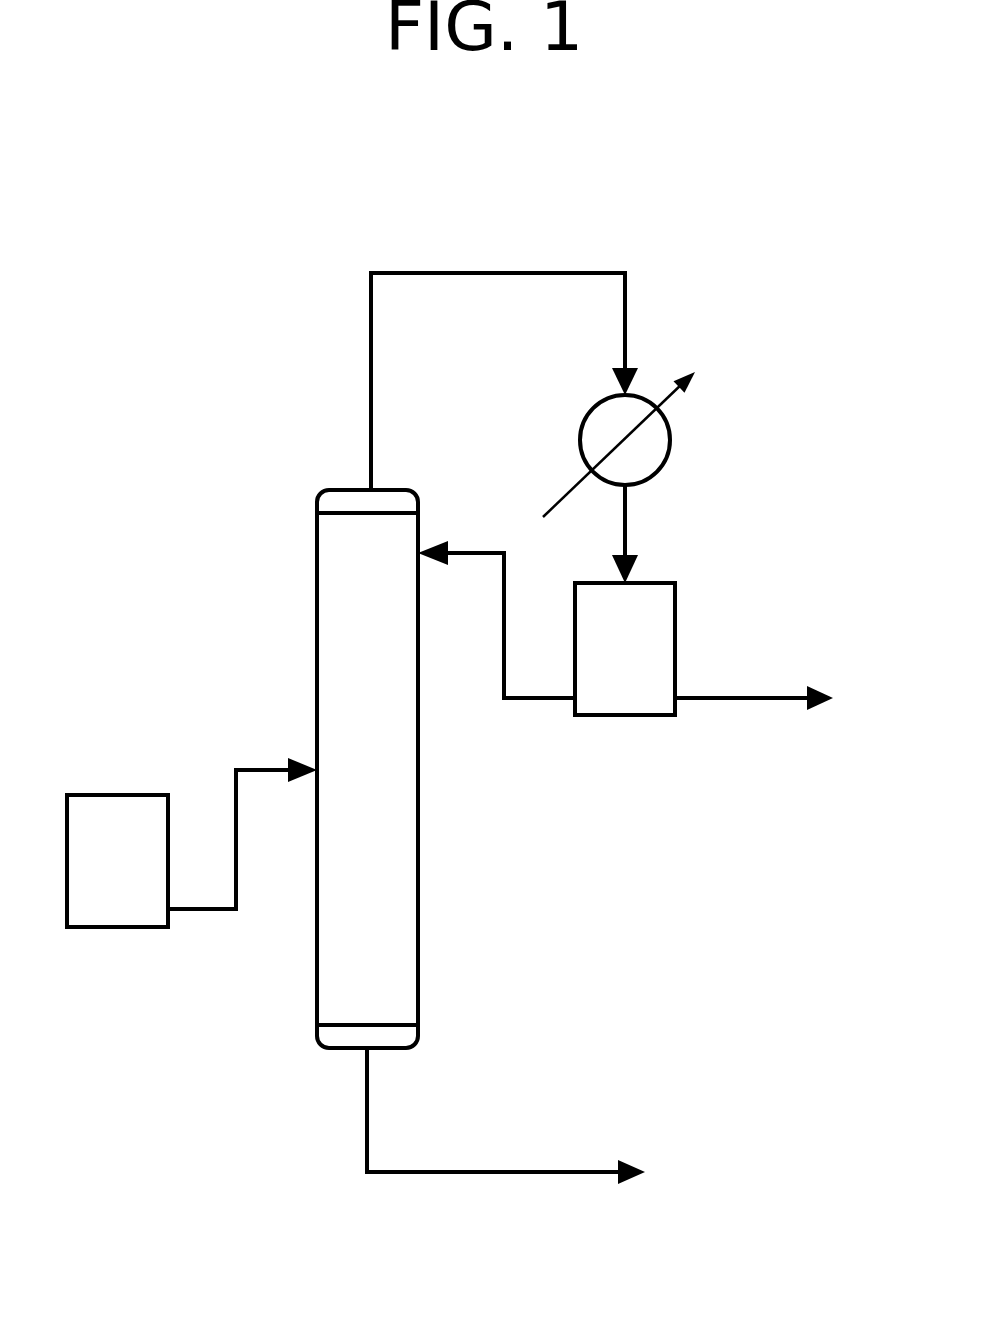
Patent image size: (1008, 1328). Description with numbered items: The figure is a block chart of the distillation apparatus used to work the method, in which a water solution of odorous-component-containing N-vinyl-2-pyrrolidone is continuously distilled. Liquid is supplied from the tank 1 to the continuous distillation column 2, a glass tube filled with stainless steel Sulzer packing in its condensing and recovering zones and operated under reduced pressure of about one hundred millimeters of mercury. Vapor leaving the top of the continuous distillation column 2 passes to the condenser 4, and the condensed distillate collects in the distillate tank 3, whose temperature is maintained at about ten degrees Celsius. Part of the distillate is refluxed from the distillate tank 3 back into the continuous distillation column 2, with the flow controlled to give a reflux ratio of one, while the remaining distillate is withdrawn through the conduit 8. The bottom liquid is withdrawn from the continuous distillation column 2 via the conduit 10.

The tank 1 is at (192, 842).
The continuous distillation column 2 is at (367, 769).
The distillate tank 3 is at (546, 628).
The condenser 4 is at (533, 428).
The conduit 8 is at (762, 698).
The conduit 10 is at (490, 1172).